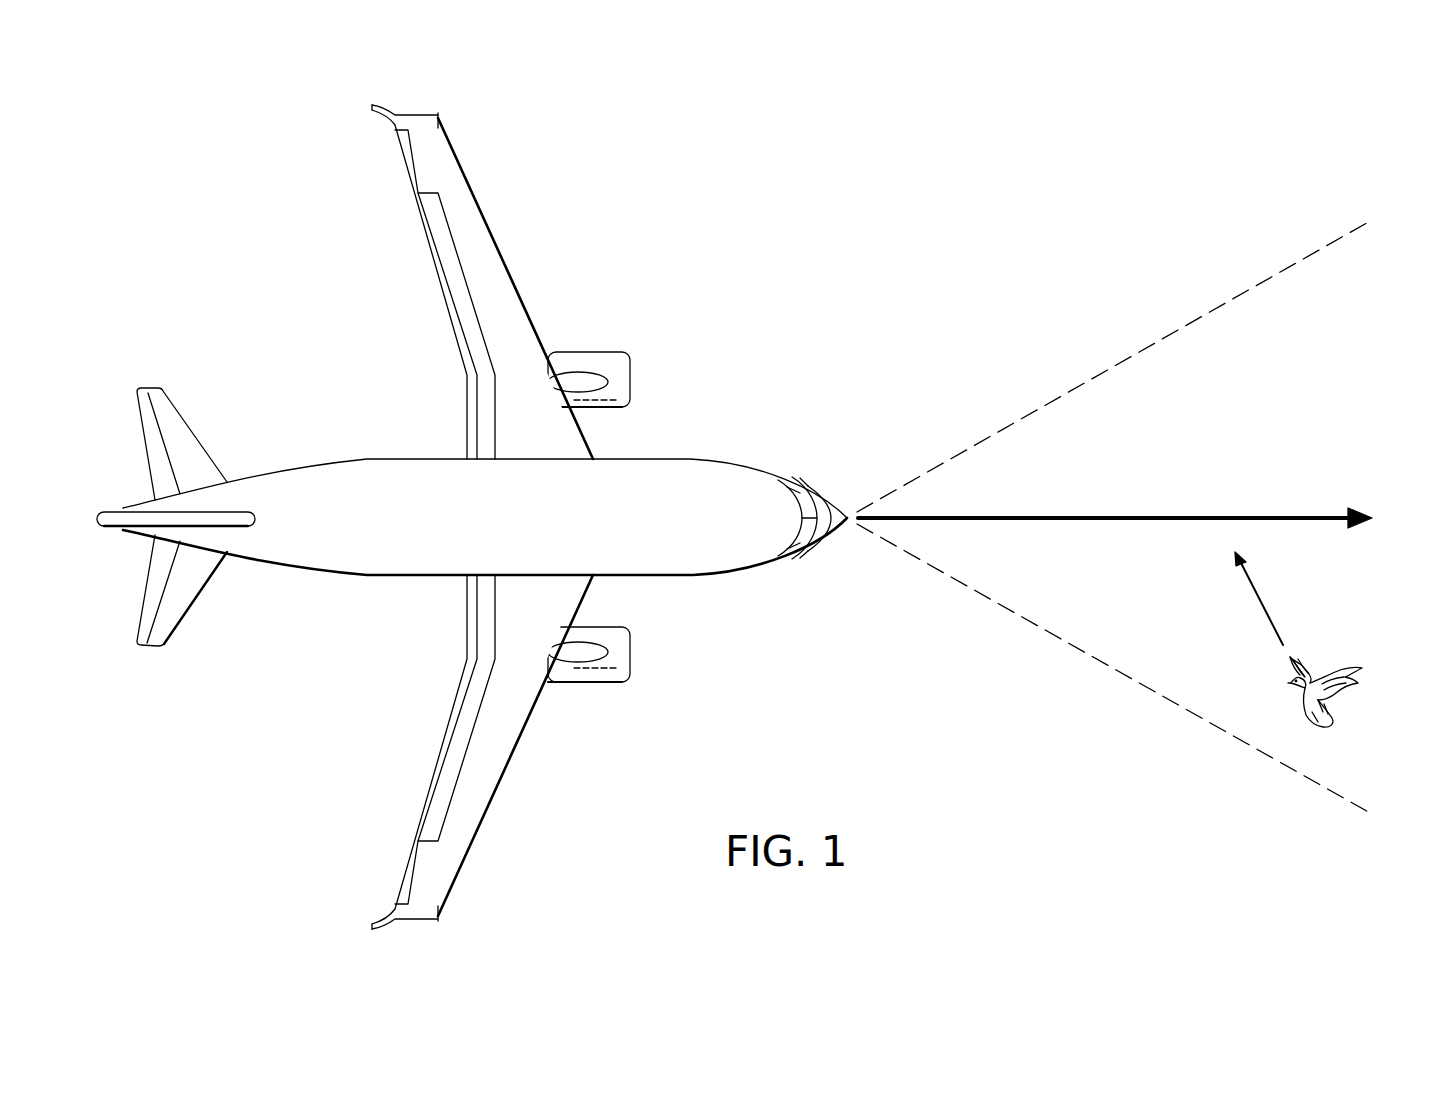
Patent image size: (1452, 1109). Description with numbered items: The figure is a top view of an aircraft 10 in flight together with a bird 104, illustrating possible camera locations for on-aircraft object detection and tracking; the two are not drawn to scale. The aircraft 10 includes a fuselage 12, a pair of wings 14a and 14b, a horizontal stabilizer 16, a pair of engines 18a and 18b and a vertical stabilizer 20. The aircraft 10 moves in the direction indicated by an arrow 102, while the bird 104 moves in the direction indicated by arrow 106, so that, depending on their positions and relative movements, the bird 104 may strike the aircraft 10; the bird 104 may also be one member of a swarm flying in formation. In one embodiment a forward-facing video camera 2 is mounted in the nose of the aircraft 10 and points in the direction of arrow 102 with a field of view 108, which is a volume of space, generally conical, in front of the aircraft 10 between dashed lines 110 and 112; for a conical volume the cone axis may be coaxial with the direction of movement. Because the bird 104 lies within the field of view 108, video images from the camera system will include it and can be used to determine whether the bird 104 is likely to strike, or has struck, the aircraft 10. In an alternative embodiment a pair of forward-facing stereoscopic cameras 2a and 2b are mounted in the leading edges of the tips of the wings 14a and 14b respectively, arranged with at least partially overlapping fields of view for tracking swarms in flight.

The aircraft 10 is at (400, 459).
The fuselage 12 is at (708, 577).
The forward-facing video camera 2 is at (847, 525).
The stereoscopic camera 2a is at (441, 121).
The stereoscopic camera 2b is at (441, 913).
The wing 14a is at (492, 232).
The wing 14b is at (490, 800).
The horizontal stabilizer 16 is at (192, 603).
The engine 18a is at (614, 352).
The engine 18b is at (603, 685).
The vertical stabilizer 20 is at (112, 512).
The arrow 102 is at (1104, 516).
The bird 104 is at (1343, 697).
The arrow 106 is at (1262, 605).
The field of view 108 is at (1394, 370).
The dashed line 110 is at (1102, 372).
The dashed line 112 is at (1104, 665).